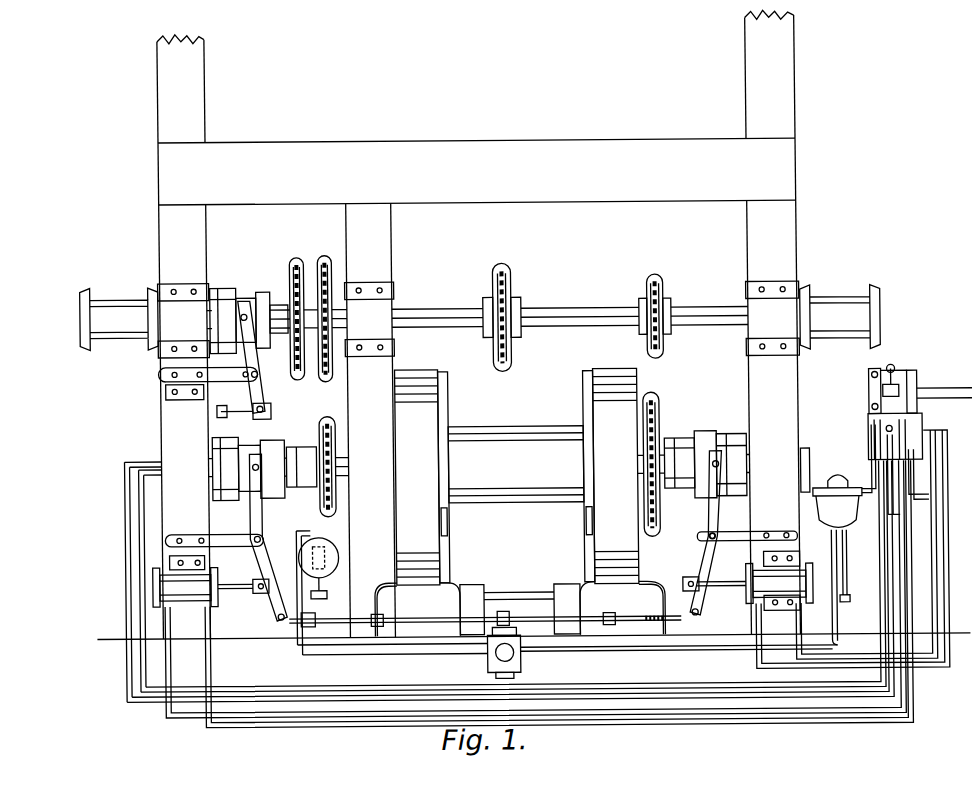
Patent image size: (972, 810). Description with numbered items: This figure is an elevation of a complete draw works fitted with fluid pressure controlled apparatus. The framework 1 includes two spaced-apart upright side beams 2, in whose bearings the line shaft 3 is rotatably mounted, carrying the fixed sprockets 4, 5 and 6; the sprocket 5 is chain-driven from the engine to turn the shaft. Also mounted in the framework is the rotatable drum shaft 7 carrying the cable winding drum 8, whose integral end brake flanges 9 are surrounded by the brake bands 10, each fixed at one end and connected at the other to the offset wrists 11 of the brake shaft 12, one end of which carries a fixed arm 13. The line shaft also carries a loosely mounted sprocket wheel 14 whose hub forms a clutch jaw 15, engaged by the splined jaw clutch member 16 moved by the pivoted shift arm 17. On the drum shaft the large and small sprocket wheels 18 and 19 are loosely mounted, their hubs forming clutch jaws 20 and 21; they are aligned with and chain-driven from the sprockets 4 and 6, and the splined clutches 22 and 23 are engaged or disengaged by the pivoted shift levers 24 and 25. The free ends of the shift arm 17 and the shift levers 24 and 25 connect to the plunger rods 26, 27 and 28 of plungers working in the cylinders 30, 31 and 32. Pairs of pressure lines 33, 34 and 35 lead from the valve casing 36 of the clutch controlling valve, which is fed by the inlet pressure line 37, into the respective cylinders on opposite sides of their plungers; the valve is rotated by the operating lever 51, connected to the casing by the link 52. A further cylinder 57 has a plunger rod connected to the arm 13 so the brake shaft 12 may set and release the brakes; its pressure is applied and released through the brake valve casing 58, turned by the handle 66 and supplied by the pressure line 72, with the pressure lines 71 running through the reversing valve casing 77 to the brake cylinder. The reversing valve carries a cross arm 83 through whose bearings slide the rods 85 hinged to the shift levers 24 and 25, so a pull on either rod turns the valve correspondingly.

The framework 1 is at (457, 142).
The upright side beams 2 is at (156, 254).
The line shaft 3 is at (575, 311).
The sprocket 4 is at (663, 292).
The sprocket 5 is at (512, 285).
The sprocket 6 is at (326, 256).
The drum shaft 7 is at (808, 458).
The cable winding drum 8 is at (545, 429).
The end brake flanges 9 is at (441, 395).
The brake bands 10 is at (441, 584).
The offset wrists 11 is at (520, 608).
The brake shaft 12 is at (518, 598).
The fixed arm 13 is at (343, 578).
The sprocket wheel 14 is at (296, 258).
The clutch jaw 15 is at (293, 368).
The jaw clutch member 16 is at (256, 287).
The shift arm 17 is at (240, 366).
The large sprocket wheel 18 is at (659, 415).
The small sprocket wheel 19 is at (318, 441).
The clutch jaw 20 is at (682, 446).
The clutch jaw 21 is at (306, 494).
The clutch 22 is at (722, 436).
The clutch 23 is at (272, 438).
The shift lever 24 is at (710, 533).
The shift lever 25 is at (252, 530).
The plunger rod 26 is at (244, 400).
The plunger rod 27 is at (727, 594).
The plunger rod 28 is at (246, 600).
The cylinder 30 is at (158, 394).
The cylinder 31 is at (803, 575).
The cylinder 32 is at (150, 592).
The pressure lines 33 is at (124, 516).
The pressure lines 34 is at (937, 690).
The pressure lines 35 is at (710, 716).
The valve casing 36 is at (921, 429).
The inlet pressure line 37 is at (898, 496).
The operating lever 51 is at (947, 394).
The link 52 is at (868, 396).
The cylinder 57 is at (319, 548).
The valve casing 58 is at (818, 506).
The handle 66 is at (922, 488).
The pressure lines 71 is at (440, 657).
The pressure line 72 is at (846, 575).
The casing 77 is at (518, 660).
The cross arm 83 is at (508, 619).
The rods 85 is at (370, 618).